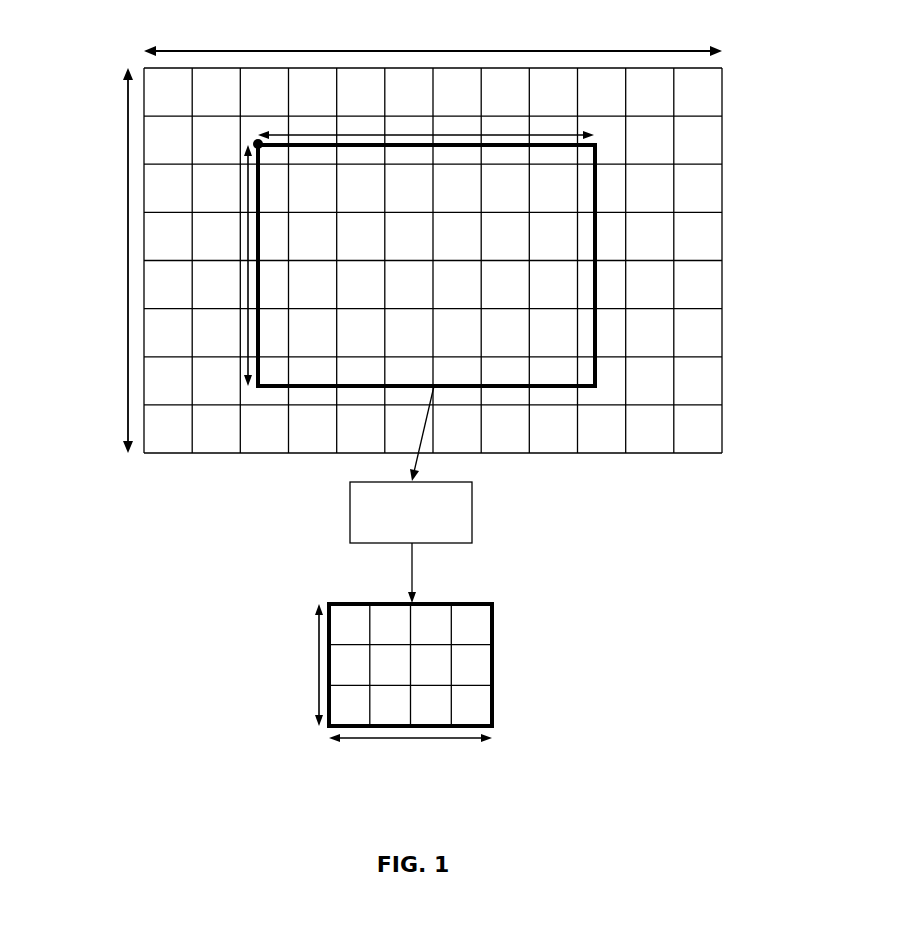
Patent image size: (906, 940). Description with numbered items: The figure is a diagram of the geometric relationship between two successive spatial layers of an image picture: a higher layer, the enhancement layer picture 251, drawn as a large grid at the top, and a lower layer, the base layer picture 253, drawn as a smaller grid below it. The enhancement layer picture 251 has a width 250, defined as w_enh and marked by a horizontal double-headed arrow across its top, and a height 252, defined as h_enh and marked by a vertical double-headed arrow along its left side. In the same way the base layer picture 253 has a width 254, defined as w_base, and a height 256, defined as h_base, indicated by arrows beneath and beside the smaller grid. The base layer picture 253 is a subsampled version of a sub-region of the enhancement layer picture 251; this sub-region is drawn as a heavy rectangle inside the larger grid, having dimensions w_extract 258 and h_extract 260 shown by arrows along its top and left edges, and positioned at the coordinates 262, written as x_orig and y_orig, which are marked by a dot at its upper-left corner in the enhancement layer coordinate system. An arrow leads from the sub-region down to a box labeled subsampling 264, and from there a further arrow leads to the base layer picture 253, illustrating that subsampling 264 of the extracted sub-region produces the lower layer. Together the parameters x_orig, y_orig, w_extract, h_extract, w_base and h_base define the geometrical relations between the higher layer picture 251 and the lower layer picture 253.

The width of enhancement layer picture 250 is at (460, 30).
The enhancement layer picture 251 is at (728, 62).
The height of enhancement layer picture 252 is at (95, 243).
The base layer picture 253 is at (497, 594).
The width of base layer picture 254 is at (452, 756).
The height of base layer picture 256 is at (294, 690).
The width of extracted sub-region 258 is at (423, 110).
The height of extracted sub-region 260 is at (210, 216).
The origin coordinates of sub-region 262 is at (245, 128).
The subsampling 264 is at (357, 525).